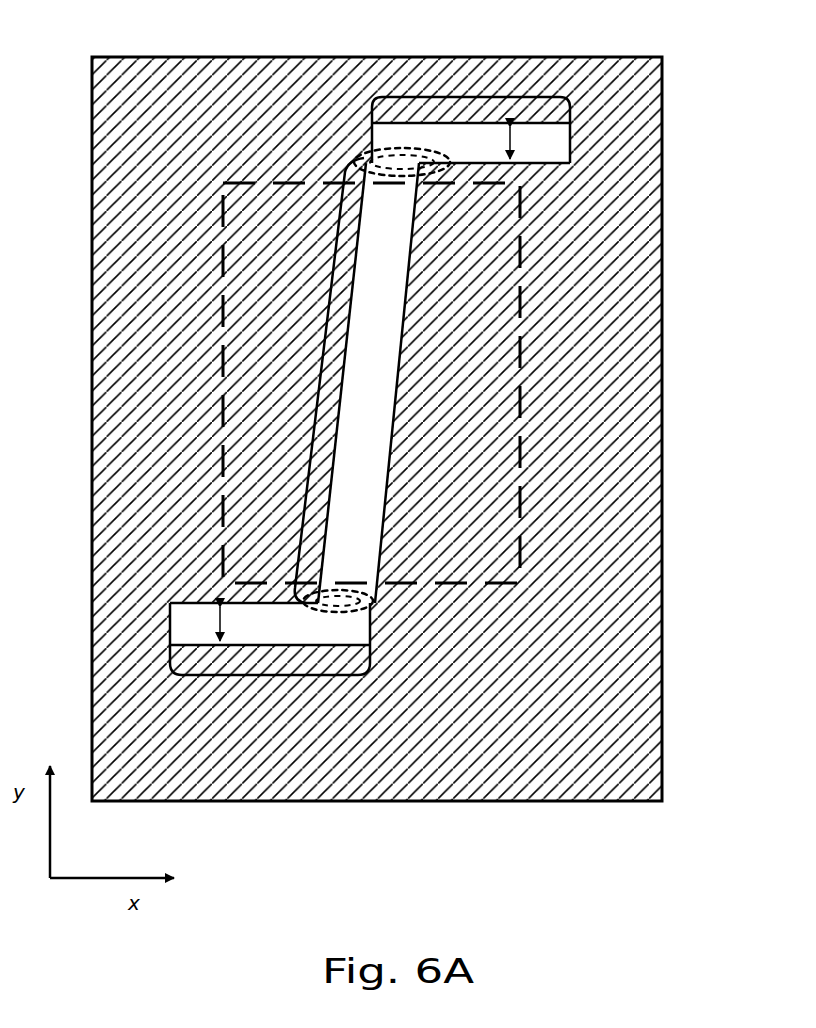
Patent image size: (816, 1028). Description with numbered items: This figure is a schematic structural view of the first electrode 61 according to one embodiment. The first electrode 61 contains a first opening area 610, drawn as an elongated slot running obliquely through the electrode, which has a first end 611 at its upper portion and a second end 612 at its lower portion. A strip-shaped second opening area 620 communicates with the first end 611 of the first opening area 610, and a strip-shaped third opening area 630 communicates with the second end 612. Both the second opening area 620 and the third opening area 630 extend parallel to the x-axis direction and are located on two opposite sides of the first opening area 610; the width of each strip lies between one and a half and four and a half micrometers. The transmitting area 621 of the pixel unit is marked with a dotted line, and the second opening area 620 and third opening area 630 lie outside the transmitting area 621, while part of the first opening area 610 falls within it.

The first electrode 61 is at (663, 180).
The first opening area 610 is at (315, 370).
The first end of the first opening area 611 is at (378, 153).
The second end of the first opening area 612 is at (380, 600).
The second opening area 620 is at (470, 93).
The transmitting area 621 is at (522, 380).
The third opening area 630 is at (275, 676).